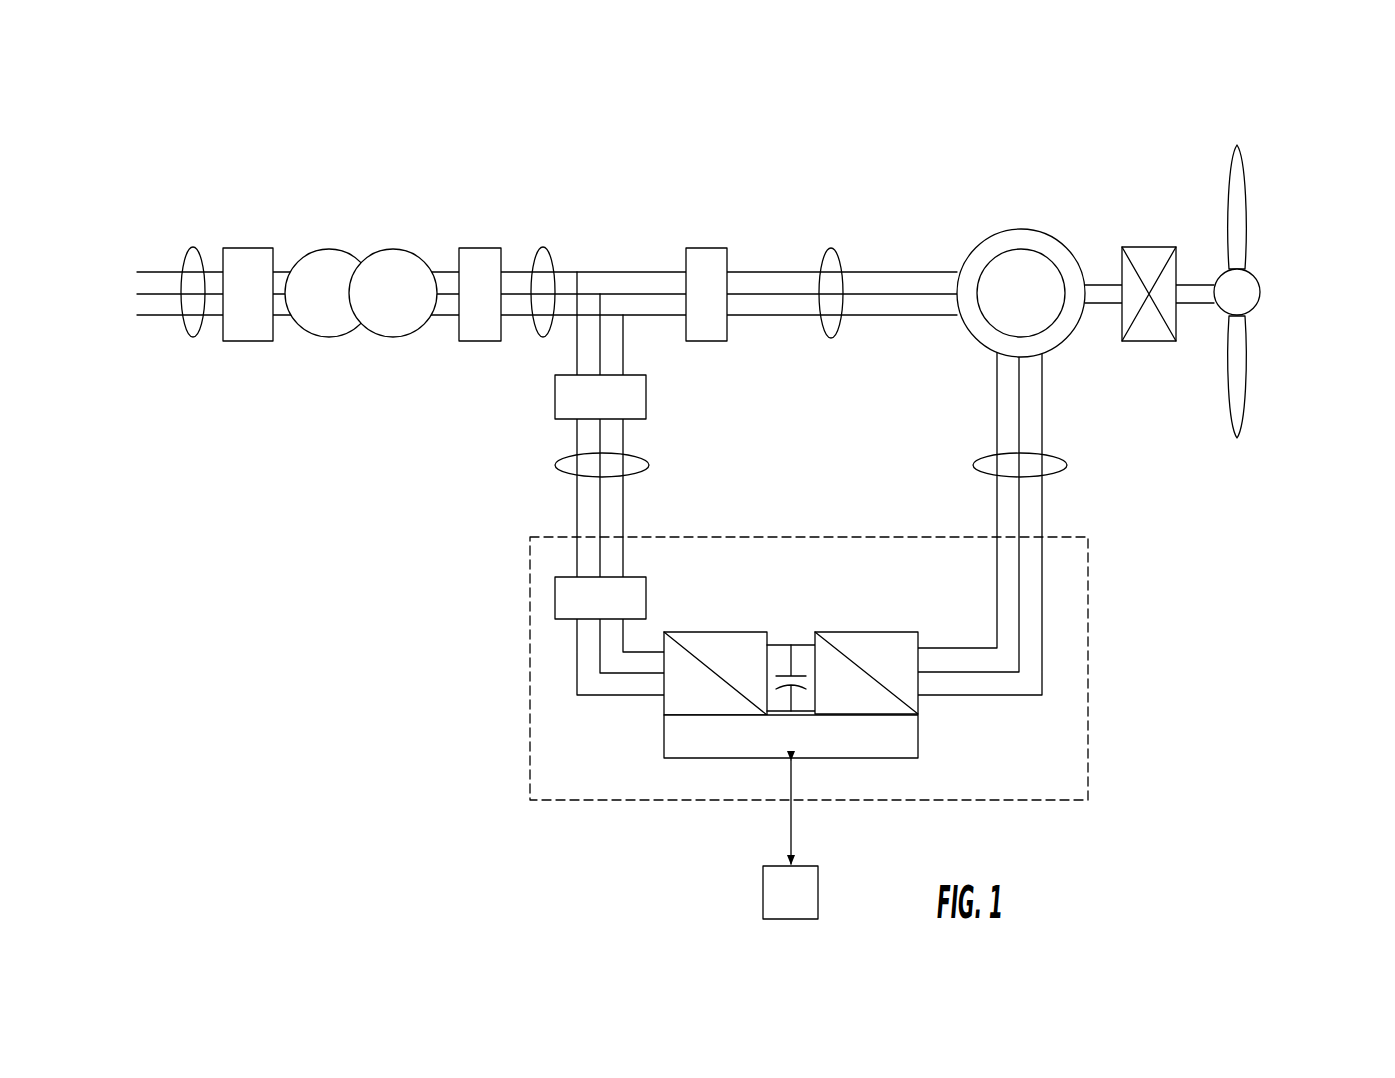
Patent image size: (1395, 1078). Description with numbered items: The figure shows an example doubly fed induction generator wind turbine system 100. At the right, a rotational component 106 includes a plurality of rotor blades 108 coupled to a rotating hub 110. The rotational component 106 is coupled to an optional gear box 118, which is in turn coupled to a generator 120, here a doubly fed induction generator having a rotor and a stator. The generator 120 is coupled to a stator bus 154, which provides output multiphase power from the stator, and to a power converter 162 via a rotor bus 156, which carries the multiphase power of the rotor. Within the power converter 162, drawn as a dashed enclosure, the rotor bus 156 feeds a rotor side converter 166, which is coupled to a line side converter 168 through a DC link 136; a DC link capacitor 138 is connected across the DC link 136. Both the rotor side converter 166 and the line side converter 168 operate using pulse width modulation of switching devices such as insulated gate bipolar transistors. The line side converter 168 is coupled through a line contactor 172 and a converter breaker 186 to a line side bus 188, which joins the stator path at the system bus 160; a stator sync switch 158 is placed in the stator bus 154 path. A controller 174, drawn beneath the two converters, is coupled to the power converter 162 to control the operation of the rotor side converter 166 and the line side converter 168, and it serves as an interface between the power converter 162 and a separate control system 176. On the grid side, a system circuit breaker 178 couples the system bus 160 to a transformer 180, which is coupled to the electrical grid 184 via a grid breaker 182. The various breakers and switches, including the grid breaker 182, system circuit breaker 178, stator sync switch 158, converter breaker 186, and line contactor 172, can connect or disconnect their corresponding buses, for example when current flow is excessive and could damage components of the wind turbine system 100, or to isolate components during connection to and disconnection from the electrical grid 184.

The wind turbine system 100 is at (397, 678).
The rotational component 106 is at (1280, 165).
The rotor blades 108 is at (1253, 218).
The rotating hub 110 is at (1262, 288).
The gear box 118 is at (1150, 247).
The generator 120 is at (1018, 229).
The DC link 136 is at (801, 642).
The DC link capacitor 138 is at (780, 674).
The stator bus 154 is at (830, 248).
The rotor bus 156 is at (1068, 465).
The stator sync switch 158 is at (702, 247).
The system bus 160 is at (545, 246).
The power converter 162 is at (1088, 630).
The rotor side converter 166 is at (918, 703).
The line side converter 168 is at (664, 702).
The line contactor 172 is at (555, 598).
The controller 174 is at (714, 760).
The control system 176 is at (818, 888).
The system circuit breaker 178 is at (478, 247).
The transformer 180 is at (392, 248).
The grid breaker 182 is at (245, 247).
The electrical grid 184 is at (200, 247).
The converter breaker 186 is at (555, 400).
The line side bus 188 is at (555, 468).